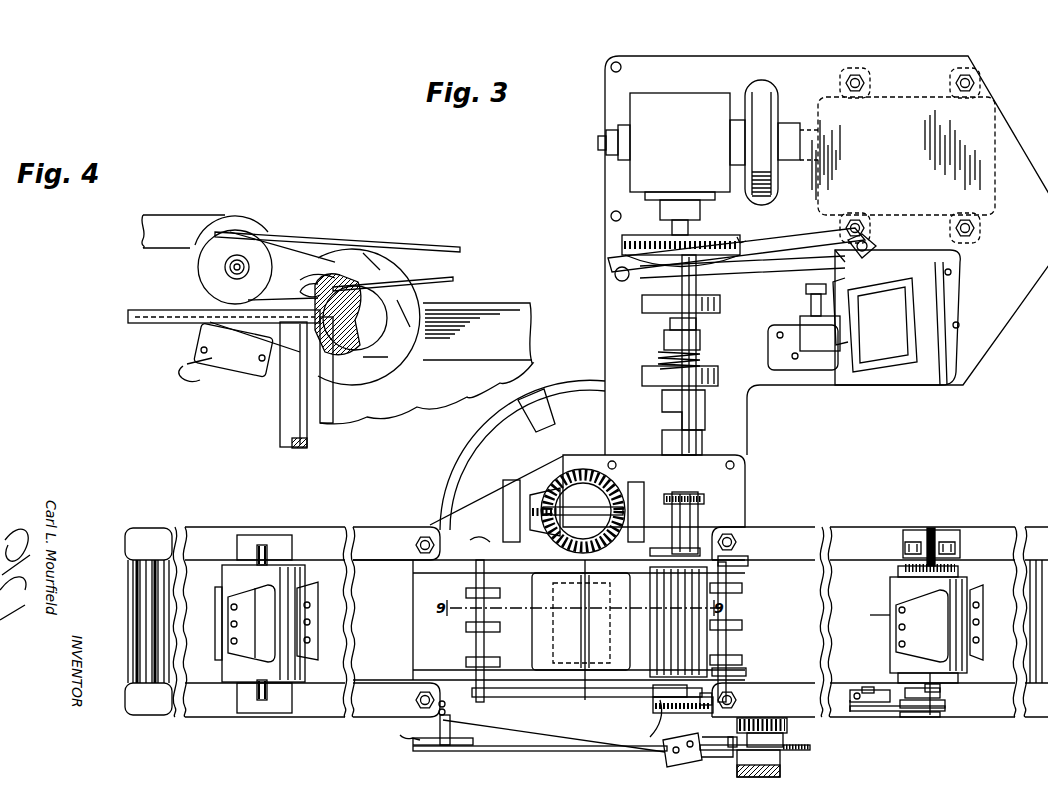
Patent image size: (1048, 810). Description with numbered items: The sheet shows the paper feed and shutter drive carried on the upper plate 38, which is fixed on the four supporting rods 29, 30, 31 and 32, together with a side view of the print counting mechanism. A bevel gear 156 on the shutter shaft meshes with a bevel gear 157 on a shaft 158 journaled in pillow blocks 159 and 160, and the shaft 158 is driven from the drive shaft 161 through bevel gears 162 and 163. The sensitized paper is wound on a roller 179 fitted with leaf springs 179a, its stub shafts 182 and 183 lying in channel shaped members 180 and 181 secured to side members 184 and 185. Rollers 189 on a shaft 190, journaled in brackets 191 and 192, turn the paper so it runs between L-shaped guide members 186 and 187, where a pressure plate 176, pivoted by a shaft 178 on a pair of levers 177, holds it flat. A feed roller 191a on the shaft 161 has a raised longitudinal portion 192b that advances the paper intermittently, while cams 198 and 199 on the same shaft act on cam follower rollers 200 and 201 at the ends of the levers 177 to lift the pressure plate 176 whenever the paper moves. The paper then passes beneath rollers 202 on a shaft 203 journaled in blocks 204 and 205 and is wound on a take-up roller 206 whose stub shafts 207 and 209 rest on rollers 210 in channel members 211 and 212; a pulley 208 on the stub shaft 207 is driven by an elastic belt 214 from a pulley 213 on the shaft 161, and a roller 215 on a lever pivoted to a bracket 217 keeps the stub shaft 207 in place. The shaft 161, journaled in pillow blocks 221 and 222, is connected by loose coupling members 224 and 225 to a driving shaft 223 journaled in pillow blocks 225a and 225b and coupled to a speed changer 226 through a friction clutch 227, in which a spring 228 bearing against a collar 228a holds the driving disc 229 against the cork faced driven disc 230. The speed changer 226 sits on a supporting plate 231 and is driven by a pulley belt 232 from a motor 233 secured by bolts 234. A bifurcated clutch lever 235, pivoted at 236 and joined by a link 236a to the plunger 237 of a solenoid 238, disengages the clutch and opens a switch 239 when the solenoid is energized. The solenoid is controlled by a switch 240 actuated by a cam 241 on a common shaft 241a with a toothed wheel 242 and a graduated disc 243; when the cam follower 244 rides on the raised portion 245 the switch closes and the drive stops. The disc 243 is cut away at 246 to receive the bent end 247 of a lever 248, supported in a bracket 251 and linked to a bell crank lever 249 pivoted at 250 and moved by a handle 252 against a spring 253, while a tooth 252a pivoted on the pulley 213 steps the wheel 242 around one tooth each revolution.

In FIG. 3, the supporting rod 29 is at (416, 701).
In FIG. 3, the supporting rod 30 is at (737, 703).
In FIG. 3, the supporting rod 31 is at (416, 546).
In FIG. 3, the supporting rod 32 is at (736, 542).
In FIG. 3, the upper plate 38 is at (445, 512).
In FIG. 3, the bevel gear 156 is at (562, 468).
In FIG. 3, the bevel gear 157 is at (545, 495).
In FIG. 3, the shaft 158 is at (583, 511).
In FIG. 3, the pillow block 159 is at (503, 492).
In FIG. 3, the pillow block 160 is at (609, 467).
In FIG. 3, the drive shaft 161 is at (696, 518).
In FIG. 3, the bevel gear 162 is at (644, 504).
In FIG. 3, the bevel gear 163 is at (706, 499).
In FIG. 3, the pressure plate 176 is at (540, 650).
In FIG. 3, the levers 177 is at (535, 697).
In FIG. 3, the shaft 178 is at (580, 633).
In FIG. 3, the roller 179 is at (890, 615).
In FIG. 3, the leaf springs 179a is at (893, 602).
In FIG. 3, the channel shaped member 180 is at (282, 552).
In FIG. 3, the channel shaped member 181 is at (282, 700).
In FIG. 3, the stub shaft 182 is at (257, 553).
In FIG. 3, the stub shaft 183 is at (257, 698).
In FIG. 3, the side member 184 is at (380, 528).
In FIG. 3, the side member 185 is at (360, 722).
In FIG. 3, the L-shaped guide member 186 is at (413, 580).
In FIG. 3, the L-shaped guide member 187 is at (413, 665).
In FIG. 3, the rollers 189 is at (472, 640).
In FIG. 3, the shaft 190 is at (486, 600).
In FIG. 3, the bracket 191 is at (470, 540).
In FIG. 3, the feed roller 191a is at (708, 640).
In FIG. 3, the bracket 192 is at (478, 710).
In FIG. 3, the raised longitudinal portion 192b is at (650, 700).
In FIG. 3, the cam 198 is at (752, 692).
In FIG. 3, the cam 199 is at (698, 548).
In FIG. 3, the cam follower roller 200 is at (658, 712).
In FIG. 3, the cam follower roller 201 is at (676, 552).
In FIG. 3, the rollers 202 is at (742, 590).
In FIG. 3, the shaft 203 is at (742, 624).
In FIG. 3, the block 204 is at (735, 562).
In FIG. 3, the block 205 is at (730, 672).
In FIG. 3, the take-up roller 206 is at (967, 590).
In FIG. 3, the stub shaft 207 is at (950, 705).
In FIG. 3, the pulley 208 is at (920, 713).
In FIG. 3, the stub shaft 209 is at (948, 520).
In FIG. 3, the rollers 210 is at (890, 705).
In FIG. 3, the channel member 211 is at (905, 535).
In FIG. 3, the channel member 212 is at (950, 718).
In FIG. 3, the pulley 213 is at (625, 757).
In FIG. 4, the pulley 213 is at (185, 262).
In FIG. 3, the belt 214 is at (858, 714).
In FIG. 3, the roller 215 is at (958, 686).
In FIG. 3, the bracket 217 is at (858, 690).
In FIG. 3, the pillow block 221 is at (733, 456).
In FIG. 3, the pillow block 222 is at (652, 736).
In FIG. 3, the drive shaft 223 is at (697, 324).
In FIG. 3, the loose coupling member 224 is at (662, 440).
In FIG. 3, the loose coupling member 225 is at (665, 404).
In FIG. 3, the pillow block 225a is at (648, 377).
In FIG. 3, the pillow block 225b is at (660, 302).
In FIG. 3, the speed changer 226 is at (670, 70).
In FIG. 3, the friction clutch 227 is at (740, 243).
In FIG. 3, the spring 228 is at (702, 361).
In FIG. 3, the collar 228a is at (701, 341).
In FIG. 3, the driving disc 229 is at (660, 238).
In FIG. 3, the cork faced driven disc 230 is at (735, 253).
In FIG. 3, the supporting plate 231 is at (740, 60).
In FIG. 3, the pulley belt 232 is at (770, 95).
In FIG. 3, the motor 233 is at (990, 150).
In FIG. 3, the bolts 234 is at (975, 232).
In FIG. 3, the bifurcated clutch lever 235 is at (786, 266).
In FIG. 3, the pivot 236 is at (621, 282).
In FIG. 3, the link 236a is at (850, 244).
In FIG. 3, the plunger 237 is at (890, 262).
In FIG. 3, the solenoid 238 is at (868, 340).
In FIG. 3, the switch 239 is at (811, 298).
In FIG. 4, the switch 240 is at (197, 342).
In FIG. 3, the cam 241 is at (790, 748).
In FIG. 3, the common shaft 241a is at (812, 702).
In FIG. 4, the common shaft 241a is at (372, 292).
In FIG. 3, the toothed wheel 242 is at (790, 725).
In FIG. 3, the graduated disc 243 is at (800, 758).
In FIG. 4, the graduated disc 243 is at (385, 372).
In FIG. 3, the cam follower 244 is at (750, 777).
In FIG. 4, the cam follower 244 is at (300, 362).
In FIG. 4, the raised portion 245 is at (330, 352).
In FIG. 4, the cut away portion 246 is at (310, 250).
In FIG. 3, the bent end 247 is at (728, 752).
In FIG. 3, the lever 248 is at (560, 752).
In FIG. 3, the bell crank lever 249 is at (428, 748).
In FIG. 3, the pivot 250 is at (448, 748).
In FIG. 3, the bracket 251 is at (690, 762).
In FIG. 3, the handle 252 is at (665, 752).
In FIG. 4, the tooth 252a is at (282, 255).
In FIG. 3, the spring 253 is at (398, 746).
In FIG. 4, the spring 253 is at (345, 283).